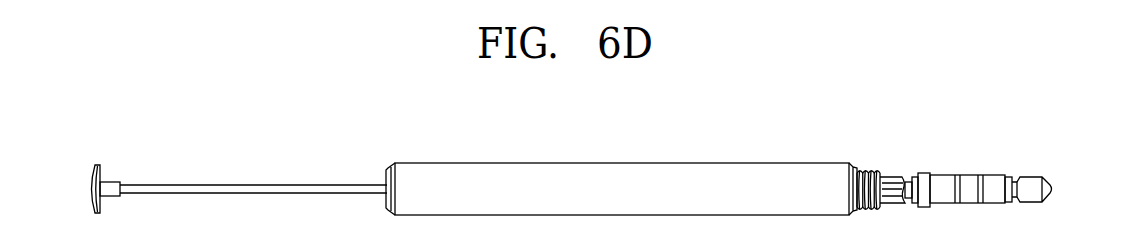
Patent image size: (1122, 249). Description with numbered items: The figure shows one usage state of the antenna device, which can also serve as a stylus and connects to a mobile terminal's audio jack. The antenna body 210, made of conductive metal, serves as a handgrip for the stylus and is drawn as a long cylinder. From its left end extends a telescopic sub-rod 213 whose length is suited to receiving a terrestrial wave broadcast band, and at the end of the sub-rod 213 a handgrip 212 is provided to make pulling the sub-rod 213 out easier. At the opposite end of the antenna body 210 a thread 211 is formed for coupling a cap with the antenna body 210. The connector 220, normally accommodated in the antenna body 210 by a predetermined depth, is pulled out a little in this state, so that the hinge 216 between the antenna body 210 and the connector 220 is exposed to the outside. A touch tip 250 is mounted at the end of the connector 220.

The antenna body 210 is at (619, 172).
The thread 211 is at (867, 169).
The handgrip 212 is at (97, 164).
The telescopic sub-rod 213 is at (262, 184).
The hinge 216 is at (896, 174).
The connector 220 is at (993, 154).
The touch tip 250 is at (1052, 187).